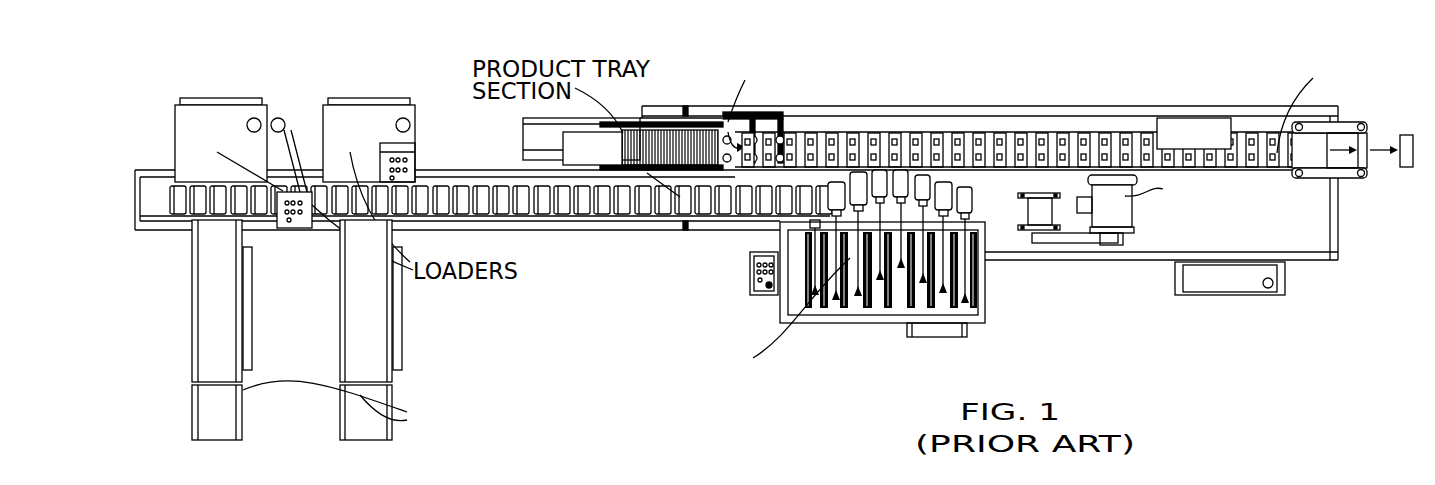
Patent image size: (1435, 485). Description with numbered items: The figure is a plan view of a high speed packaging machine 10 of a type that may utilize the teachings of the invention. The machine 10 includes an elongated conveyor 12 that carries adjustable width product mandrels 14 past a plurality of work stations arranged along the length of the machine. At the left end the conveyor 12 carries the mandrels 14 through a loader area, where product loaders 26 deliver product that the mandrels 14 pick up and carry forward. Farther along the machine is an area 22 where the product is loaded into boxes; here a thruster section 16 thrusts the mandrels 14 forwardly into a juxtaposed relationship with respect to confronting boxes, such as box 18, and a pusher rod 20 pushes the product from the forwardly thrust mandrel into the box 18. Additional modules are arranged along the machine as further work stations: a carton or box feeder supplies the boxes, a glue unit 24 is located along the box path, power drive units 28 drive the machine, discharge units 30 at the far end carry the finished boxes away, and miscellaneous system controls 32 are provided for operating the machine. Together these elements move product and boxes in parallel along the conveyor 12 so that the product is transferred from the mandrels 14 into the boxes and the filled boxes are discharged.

The packaging machine 10 is at (1072, 94).
The conveyor 12 is at (491, 185).
The product mandrels 14 is at (733, 197).
The thruster section 16 is at (855, 183).
The box 18 is at (1006, 155).
The pusher rod 20 is at (913, 283).
The area 22 is at (910, 100).
The glue unit 24 is at (1205, 136).
The product loaders 26 is at (218, 405).
The power drive units 28 is at (1112, 212).
The discharge units 30 is at (1379, 126).
The system controls 32 is at (1195, 288).